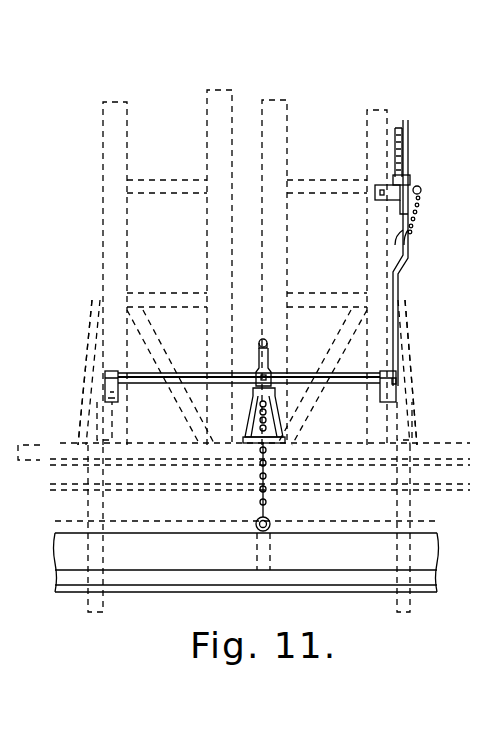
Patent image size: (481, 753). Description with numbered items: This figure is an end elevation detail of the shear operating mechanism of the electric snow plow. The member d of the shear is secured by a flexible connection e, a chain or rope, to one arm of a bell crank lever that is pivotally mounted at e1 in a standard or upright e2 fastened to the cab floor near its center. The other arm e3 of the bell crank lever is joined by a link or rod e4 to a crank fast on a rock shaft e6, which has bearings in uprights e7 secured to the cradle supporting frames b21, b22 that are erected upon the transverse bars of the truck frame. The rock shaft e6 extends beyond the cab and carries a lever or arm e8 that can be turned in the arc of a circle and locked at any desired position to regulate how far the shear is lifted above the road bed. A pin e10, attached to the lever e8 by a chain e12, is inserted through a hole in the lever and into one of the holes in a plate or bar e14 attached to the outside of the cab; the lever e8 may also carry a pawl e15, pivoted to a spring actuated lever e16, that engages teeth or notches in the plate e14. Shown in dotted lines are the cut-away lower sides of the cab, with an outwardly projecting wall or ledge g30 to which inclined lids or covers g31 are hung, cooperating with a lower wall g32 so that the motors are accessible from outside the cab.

The shear member d is at (246, 562).
The flexible connection e is at (260, 469).
The pivot e1 is at (276, 398).
The standard e2 is at (284, 420).
The lever arm e3 is at (258, 362).
The link e4 is at (259, 341).
The rock shaft e6 is at (186, 373).
The upright e7 is at (380, 395).
The lever e8 is at (398, 296).
The pin e10 is at (417, 186).
The chain e12 is at (418, 208).
The plate e14 is at (410, 175).
The pawl e15 is at (395, 171).
The spring actuated lever e16 is at (402, 135).
The metal frame b21 is at (112, 418).
The metal frame b22 is at (395, 428).
The outwardly projecting wall g30 is at (426, 303).
The lid g31 is at (430, 334).
The lower wall g32 is at (432, 412).